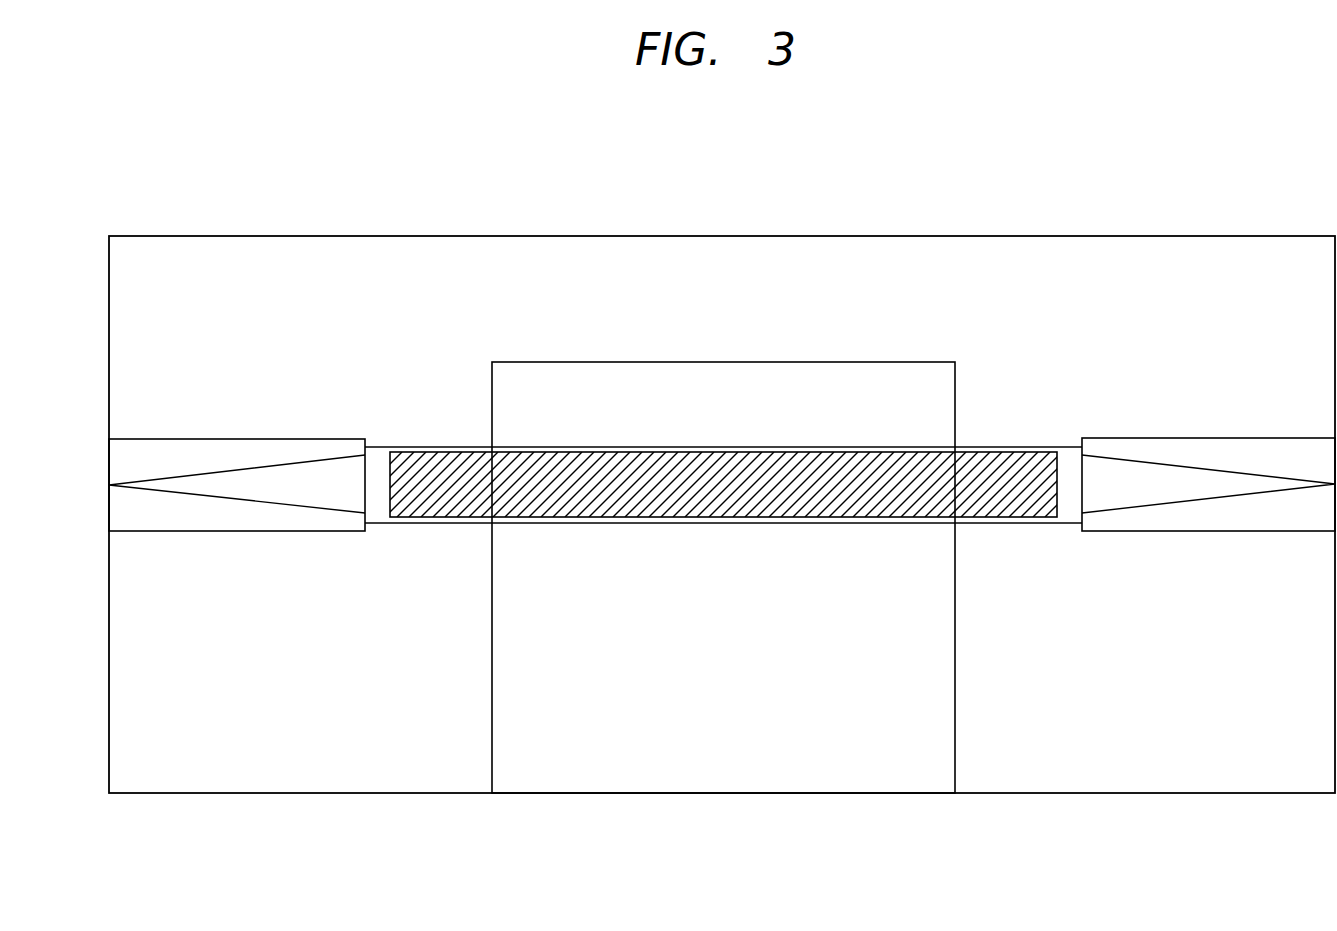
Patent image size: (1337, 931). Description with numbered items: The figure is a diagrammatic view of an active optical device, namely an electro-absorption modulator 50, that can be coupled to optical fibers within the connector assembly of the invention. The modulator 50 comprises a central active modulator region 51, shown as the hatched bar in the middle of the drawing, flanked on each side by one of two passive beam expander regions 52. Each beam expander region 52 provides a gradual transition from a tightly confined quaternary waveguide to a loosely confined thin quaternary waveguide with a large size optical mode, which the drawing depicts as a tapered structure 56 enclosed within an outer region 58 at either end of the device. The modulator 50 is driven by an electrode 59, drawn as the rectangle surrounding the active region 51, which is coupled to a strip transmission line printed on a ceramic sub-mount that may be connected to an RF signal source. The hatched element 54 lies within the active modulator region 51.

The electro-absorption modulator 50 is at (857, 172).
The active modulator region 51 is at (752, 583).
The passive beam expander region 52 is at (722, 489).
The active region 54 is at (660, 465).
The taper 56 is at (333, 475).
The coupler cladding 58 is at (195, 453).
The electrode 59 is at (878, 773).